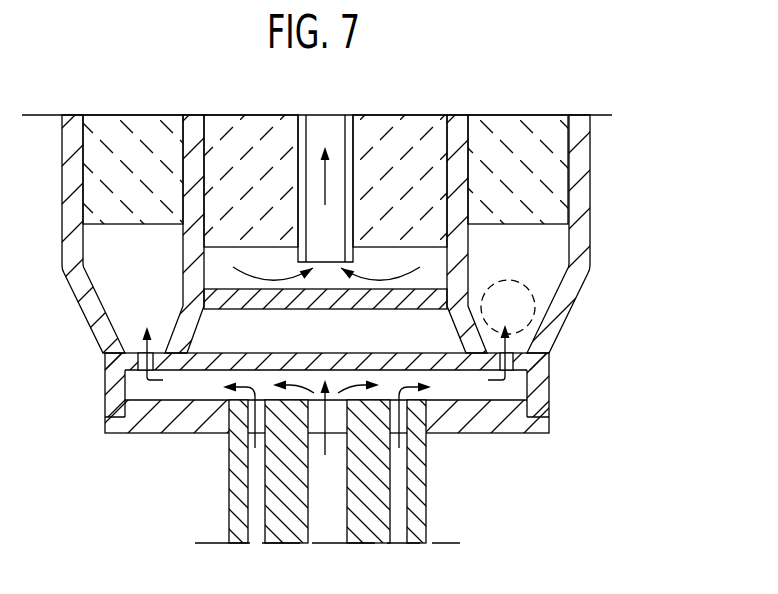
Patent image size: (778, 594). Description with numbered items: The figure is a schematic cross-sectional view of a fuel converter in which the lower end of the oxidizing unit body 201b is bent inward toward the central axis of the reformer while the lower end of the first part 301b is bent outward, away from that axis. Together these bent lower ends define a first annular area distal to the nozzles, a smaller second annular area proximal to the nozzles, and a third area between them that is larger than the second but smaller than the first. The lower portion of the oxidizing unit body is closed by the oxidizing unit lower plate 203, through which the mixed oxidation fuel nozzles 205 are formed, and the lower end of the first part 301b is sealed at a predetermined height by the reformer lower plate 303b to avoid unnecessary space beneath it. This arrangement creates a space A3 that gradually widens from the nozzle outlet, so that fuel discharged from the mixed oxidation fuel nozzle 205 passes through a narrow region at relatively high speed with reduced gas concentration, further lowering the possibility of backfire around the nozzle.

The oxidizing unit body 201b is at (590, 231).
The first part 301b is at (468, 262).
The space A3 is at (535, 305).
The mixed oxidation fuel nozzle 205 is at (513, 370).
The oxidizing unit lower plate 203 is at (180, 368).
The reformer lower plate 303b is at (400, 310).